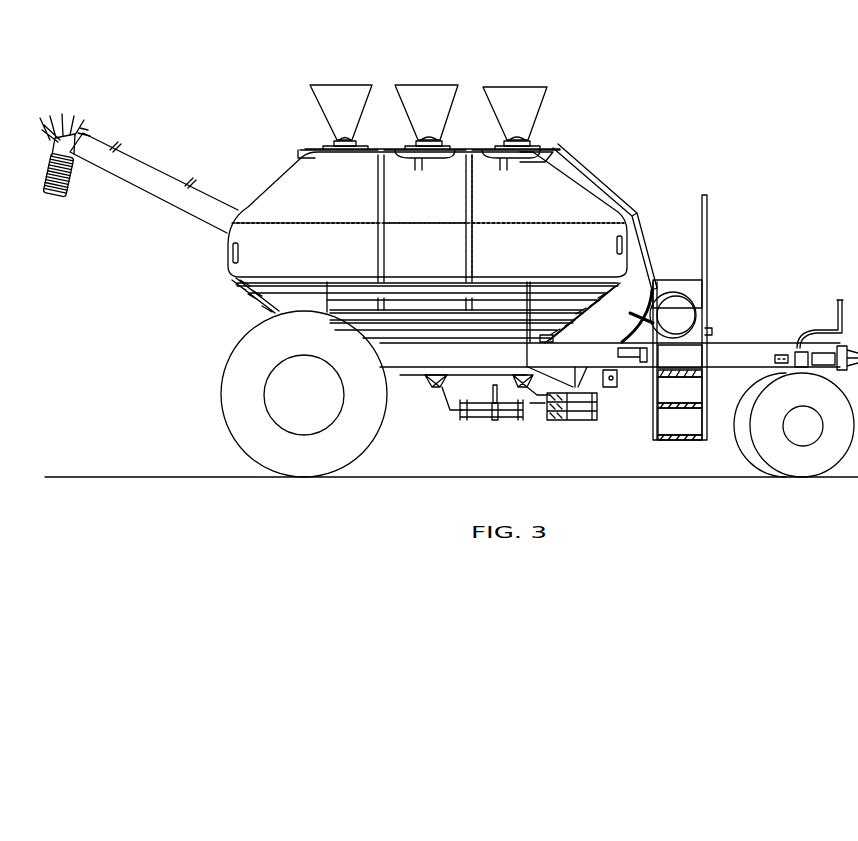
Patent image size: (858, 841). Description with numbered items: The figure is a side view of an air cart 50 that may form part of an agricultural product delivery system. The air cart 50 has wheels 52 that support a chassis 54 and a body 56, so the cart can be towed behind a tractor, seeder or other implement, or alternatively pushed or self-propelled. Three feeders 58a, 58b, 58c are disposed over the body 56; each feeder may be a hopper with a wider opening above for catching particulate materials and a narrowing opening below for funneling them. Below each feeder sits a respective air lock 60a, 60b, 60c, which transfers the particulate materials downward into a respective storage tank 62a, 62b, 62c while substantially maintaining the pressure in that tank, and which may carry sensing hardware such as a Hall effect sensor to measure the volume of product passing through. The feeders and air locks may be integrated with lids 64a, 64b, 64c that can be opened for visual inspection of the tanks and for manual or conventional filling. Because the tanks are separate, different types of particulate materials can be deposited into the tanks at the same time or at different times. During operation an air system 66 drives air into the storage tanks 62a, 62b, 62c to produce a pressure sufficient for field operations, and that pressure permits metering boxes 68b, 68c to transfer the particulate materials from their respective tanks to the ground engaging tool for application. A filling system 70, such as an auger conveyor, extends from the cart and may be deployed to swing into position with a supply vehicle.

The air cart 50 is at (720, 58).
The wheels 52 is at (286, 462).
The chassis 54 is at (755, 350).
The body 56 is at (598, 180).
The feeder 58a is at (319, 104).
The feeder 58b is at (403, 105).
The feeder 58c is at (492, 106).
The air lock 60a is at (338, 140).
The air lock 60b is at (432, 140).
The air lock 60c is at (515, 138).
The storage tank 62a is at (345, 206).
The storage tank 62b is at (440, 206).
The storage tank 62c is at (531, 206).
The lid 64a is at (325, 146).
The lid 64b is at (450, 146).
The lid 64c is at (535, 148).
The air system 66 is at (675, 305).
The metering box 68b is at (435, 380).
The metering box 68c is at (525, 382).
The filling system 70 is at (110, 158).